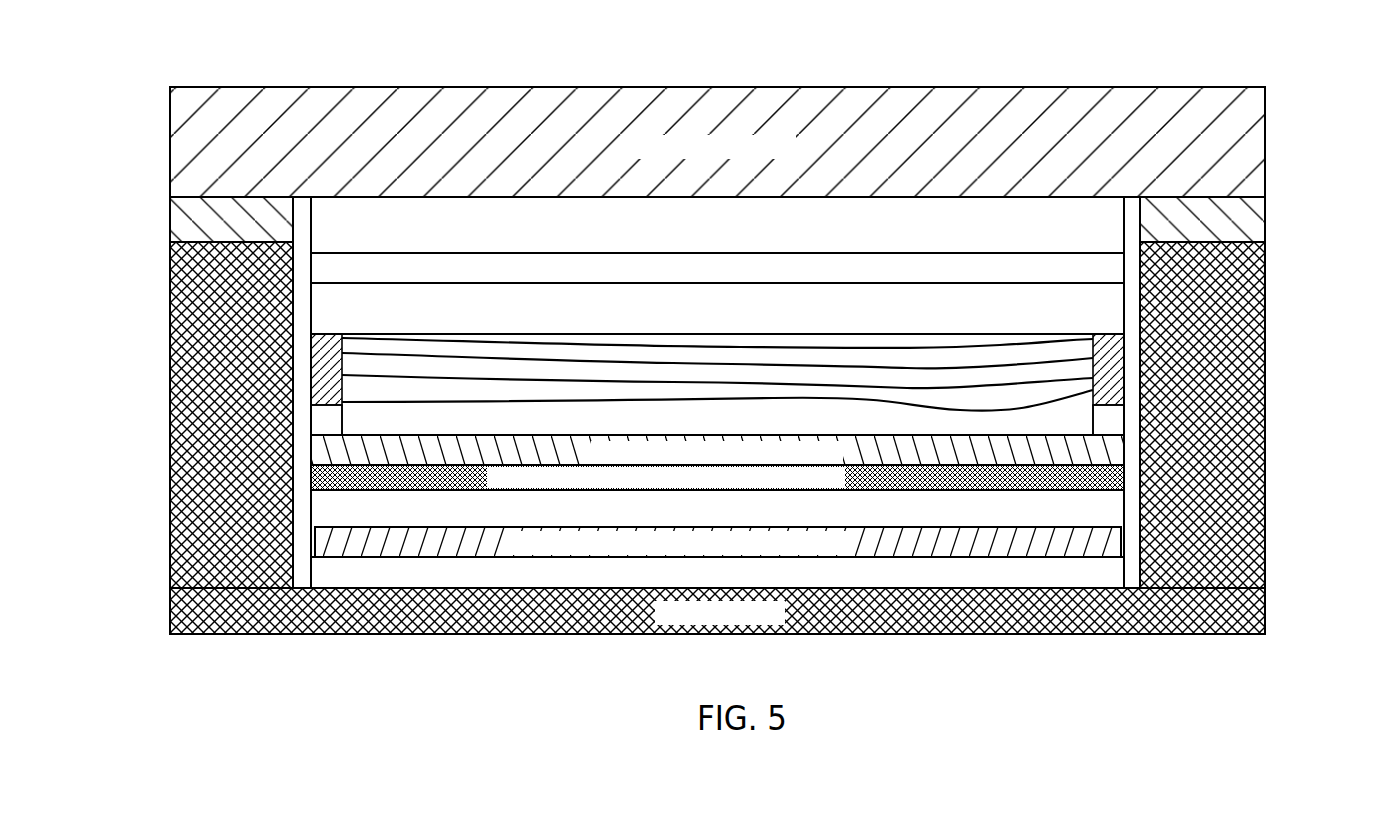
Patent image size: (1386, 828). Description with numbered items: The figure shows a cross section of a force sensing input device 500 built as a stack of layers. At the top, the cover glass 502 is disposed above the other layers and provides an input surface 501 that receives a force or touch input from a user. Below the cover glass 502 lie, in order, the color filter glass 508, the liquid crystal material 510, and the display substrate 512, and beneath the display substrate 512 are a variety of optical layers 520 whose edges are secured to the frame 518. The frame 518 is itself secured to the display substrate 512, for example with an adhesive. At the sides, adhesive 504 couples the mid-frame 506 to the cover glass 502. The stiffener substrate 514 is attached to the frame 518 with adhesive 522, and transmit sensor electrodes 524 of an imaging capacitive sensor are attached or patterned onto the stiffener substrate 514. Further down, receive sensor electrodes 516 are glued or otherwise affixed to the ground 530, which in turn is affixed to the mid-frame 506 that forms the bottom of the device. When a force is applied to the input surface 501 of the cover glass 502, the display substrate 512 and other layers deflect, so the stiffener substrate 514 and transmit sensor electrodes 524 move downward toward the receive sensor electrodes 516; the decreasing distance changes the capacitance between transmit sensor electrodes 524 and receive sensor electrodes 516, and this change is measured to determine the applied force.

The force sensing input device 500 is at (1213, 56).
The input surface 501 is at (541, 87).
The cover glass 502 is at (884, 157).
The adhesive 504 is at (1300, 218).
The mid-frame 506 is at (887, 623).
The color filter glass 508 is at (887, 240).
The liquid crystal material 510 is at (884, 280).
The display substrate 512 is at (887, 322).
The stiffener substrate 514 is at (887, 463).
The receive sensor electrodes 516 is at (897, 553).
The frame 518 is at (1177, 311).
The optical layers 520 is at (887, 430).
The adhesive 522 is at (1173, 447).
The transmit sensor electrodes 524 is at (888, 487).
The ground 530 is at (887, 585).